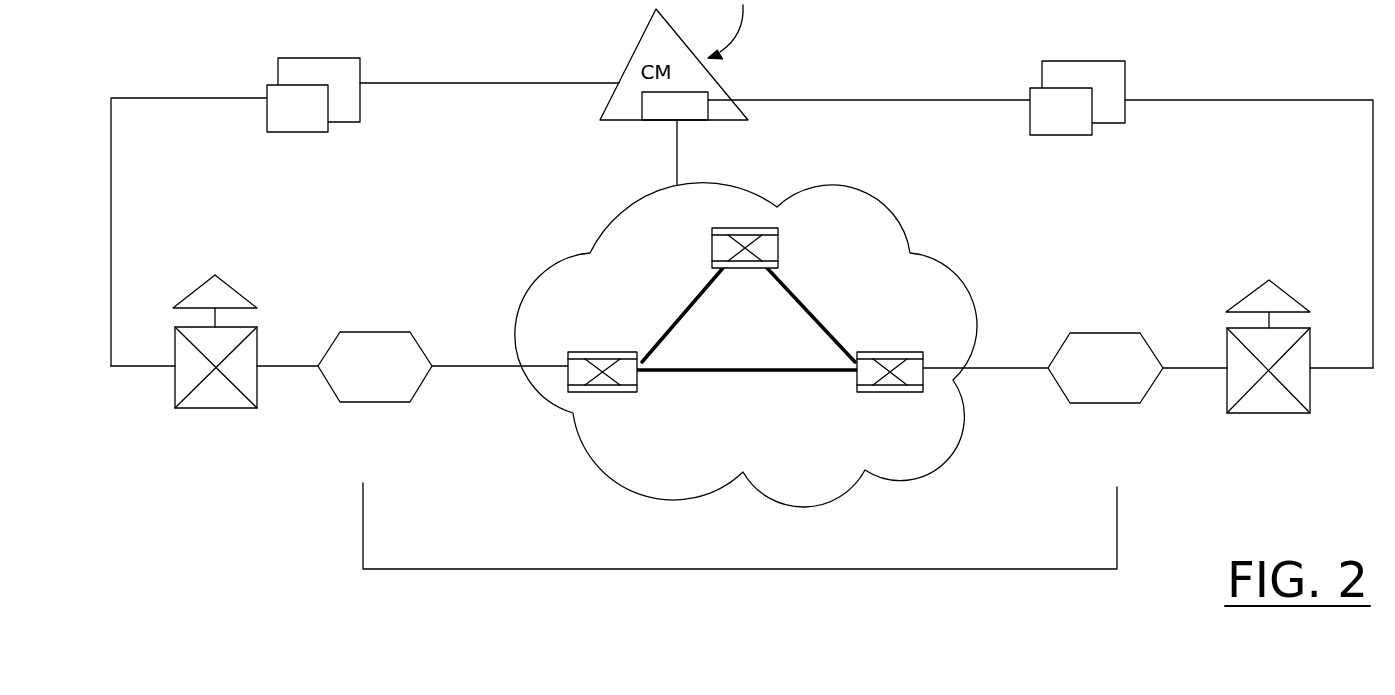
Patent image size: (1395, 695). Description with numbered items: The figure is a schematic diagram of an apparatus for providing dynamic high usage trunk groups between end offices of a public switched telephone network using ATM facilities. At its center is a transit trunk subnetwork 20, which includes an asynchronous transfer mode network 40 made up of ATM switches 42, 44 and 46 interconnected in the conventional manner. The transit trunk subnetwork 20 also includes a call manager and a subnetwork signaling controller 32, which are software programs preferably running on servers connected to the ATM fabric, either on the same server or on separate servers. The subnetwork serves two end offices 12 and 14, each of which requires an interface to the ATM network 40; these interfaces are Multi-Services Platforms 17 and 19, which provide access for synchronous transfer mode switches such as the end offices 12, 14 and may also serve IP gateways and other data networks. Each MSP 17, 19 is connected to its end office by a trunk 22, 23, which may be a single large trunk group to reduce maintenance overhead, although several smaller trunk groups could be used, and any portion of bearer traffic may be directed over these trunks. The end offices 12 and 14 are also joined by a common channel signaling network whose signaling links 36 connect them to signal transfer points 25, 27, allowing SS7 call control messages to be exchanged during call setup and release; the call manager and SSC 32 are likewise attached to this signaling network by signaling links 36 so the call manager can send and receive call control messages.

The end office 12 is at (190, 293).
The end office 14 is at (1312, 355).
The Multi-Services Platform 17 is at (385, 332).
The Multi-Services Platform 19 is at (1097, 403).
The transit trunk subnetwork 20 is at (400, 578).
The trunk group 22 is at (302, 366).
The trunk group 23 is at (1191, 368).
The signal transfer point 25 is at (332, 58).
The signal transfer point 27 is at (1098, 61).
The subnetwork signaling controller 32 is at (724, 87).
The common channel signaling link 36 is at (156, 84).
The asynchronous transfer mode network 40 is at (731, 355).
The ATM switch 42 is at (590, 392).
The ATM switch 44 is at (905, 392).
The ATM switch 46 is at (778, 240).